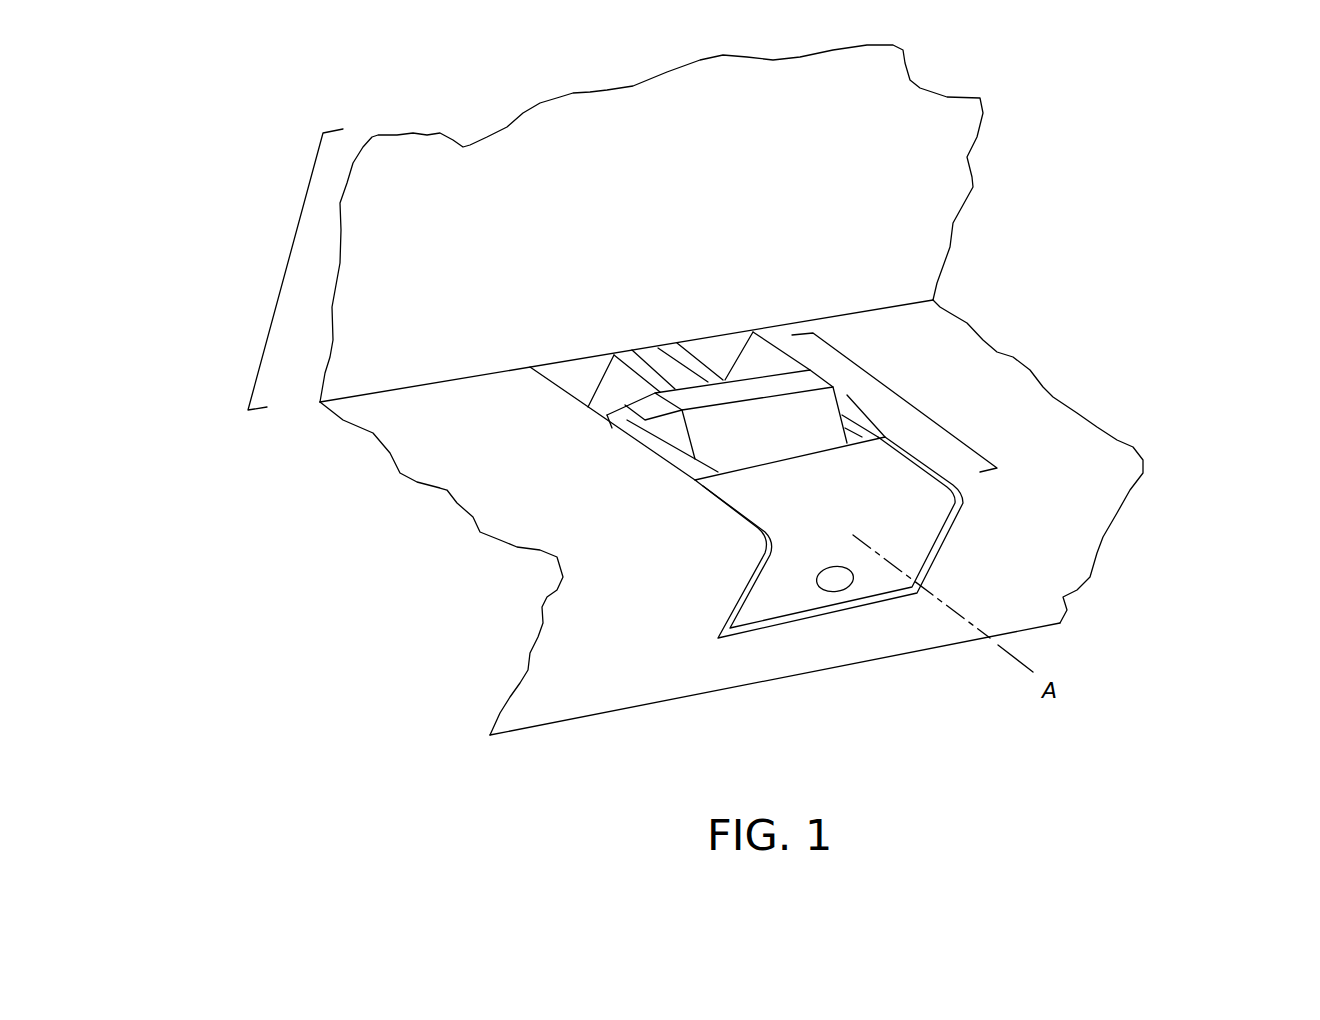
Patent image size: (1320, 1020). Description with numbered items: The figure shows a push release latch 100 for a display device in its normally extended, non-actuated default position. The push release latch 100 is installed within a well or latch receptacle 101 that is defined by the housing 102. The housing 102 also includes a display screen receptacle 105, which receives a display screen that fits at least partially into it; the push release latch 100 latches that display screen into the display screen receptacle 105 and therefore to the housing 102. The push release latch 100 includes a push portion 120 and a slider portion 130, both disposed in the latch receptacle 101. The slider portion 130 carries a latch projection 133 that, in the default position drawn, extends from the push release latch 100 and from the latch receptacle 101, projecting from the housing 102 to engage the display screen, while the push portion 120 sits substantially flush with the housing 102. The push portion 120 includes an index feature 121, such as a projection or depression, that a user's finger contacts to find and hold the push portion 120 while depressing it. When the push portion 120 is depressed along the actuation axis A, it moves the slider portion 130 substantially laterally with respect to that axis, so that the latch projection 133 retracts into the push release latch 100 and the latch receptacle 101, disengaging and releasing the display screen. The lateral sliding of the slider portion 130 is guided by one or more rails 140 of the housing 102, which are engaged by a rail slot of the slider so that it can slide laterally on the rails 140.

The push release latch 100 is at (767, 638).
The latch receptacle 101 is at (907, 397).
The housing 102 is at (1117, 517).
The display screen receptacle 105 is at (283, 268).
The push portion 120 is at (917, 548).
The index feature 121 is at (838, 582).
The slider portion 130 is at (625, 415).
The latch projection 133 is at (710, 430).
The rails 140 is at (627, 378).